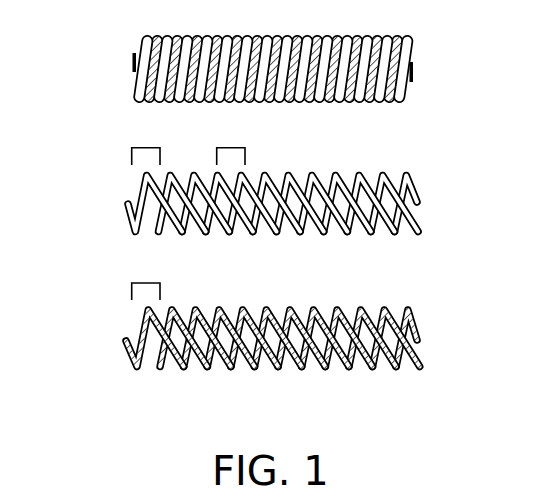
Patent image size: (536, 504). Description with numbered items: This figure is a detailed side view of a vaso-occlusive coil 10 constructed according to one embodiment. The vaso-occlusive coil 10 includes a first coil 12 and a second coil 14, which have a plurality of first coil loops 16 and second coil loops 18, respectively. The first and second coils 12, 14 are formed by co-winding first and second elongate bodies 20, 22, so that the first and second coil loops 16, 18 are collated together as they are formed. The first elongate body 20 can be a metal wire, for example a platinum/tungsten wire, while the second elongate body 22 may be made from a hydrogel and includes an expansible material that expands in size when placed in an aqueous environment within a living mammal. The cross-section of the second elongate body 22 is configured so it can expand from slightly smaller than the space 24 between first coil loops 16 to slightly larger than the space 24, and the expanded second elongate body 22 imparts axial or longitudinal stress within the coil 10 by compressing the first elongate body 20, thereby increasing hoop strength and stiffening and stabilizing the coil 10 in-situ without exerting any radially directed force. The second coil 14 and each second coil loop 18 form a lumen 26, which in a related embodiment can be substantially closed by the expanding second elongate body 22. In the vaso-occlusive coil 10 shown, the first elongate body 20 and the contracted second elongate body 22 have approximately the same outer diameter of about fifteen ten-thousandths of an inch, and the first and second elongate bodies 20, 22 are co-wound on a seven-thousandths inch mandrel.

The vaso-occlusive coil 10 is at (103, 68).
The first coil 12 is at (103, 204).
The second coil 14 is at (103, 340).
The first coil loops 16 is at (136, 148).
The second coil loops 18 is at (136, 283).
The first elongate body 20 is at (398, 229).
The second elongate body 22 is at (397, 365).
The space 24 is at (227, 148).
The lumen 26 is at (412, 334).